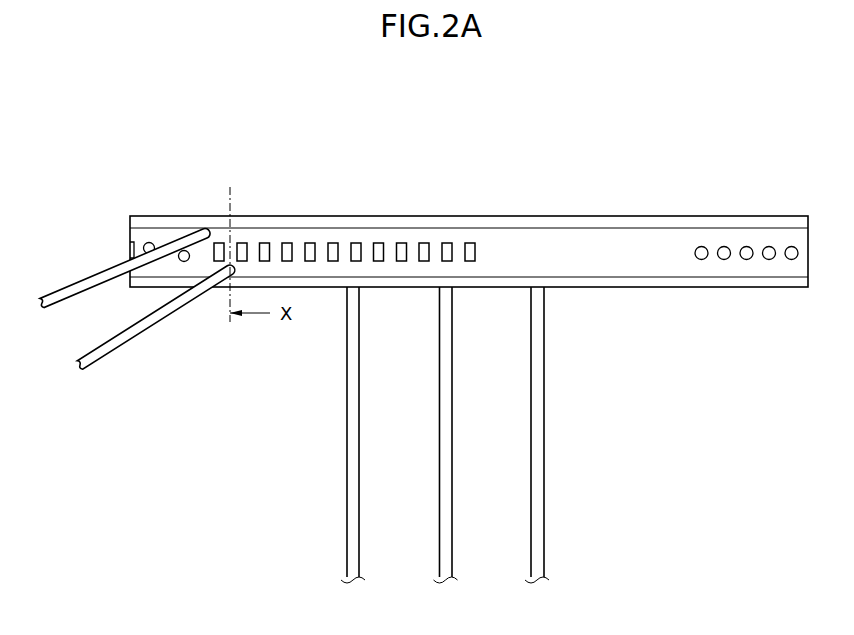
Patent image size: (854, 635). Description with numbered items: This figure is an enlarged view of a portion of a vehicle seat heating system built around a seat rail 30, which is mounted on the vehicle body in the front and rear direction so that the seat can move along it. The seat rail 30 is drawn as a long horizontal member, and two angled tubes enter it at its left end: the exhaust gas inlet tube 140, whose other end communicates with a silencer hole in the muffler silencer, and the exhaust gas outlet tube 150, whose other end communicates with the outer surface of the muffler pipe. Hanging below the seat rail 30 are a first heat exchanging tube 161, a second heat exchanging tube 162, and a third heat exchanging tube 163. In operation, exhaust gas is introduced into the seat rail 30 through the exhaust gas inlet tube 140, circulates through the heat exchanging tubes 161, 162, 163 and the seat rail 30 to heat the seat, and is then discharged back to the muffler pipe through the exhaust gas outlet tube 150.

The seat rail 30 is at (606, 245).
The exhaust gas outlet tube 150 is at (80, 287).
The exhaust gas inlet tube 140 is at (130, 333).
The first heat exchanging tube 161 is at (356, 429).
The second heat exchanging tube 162 is at (448, 429).
The third heat exchanging tube 163 is at (540, 429).